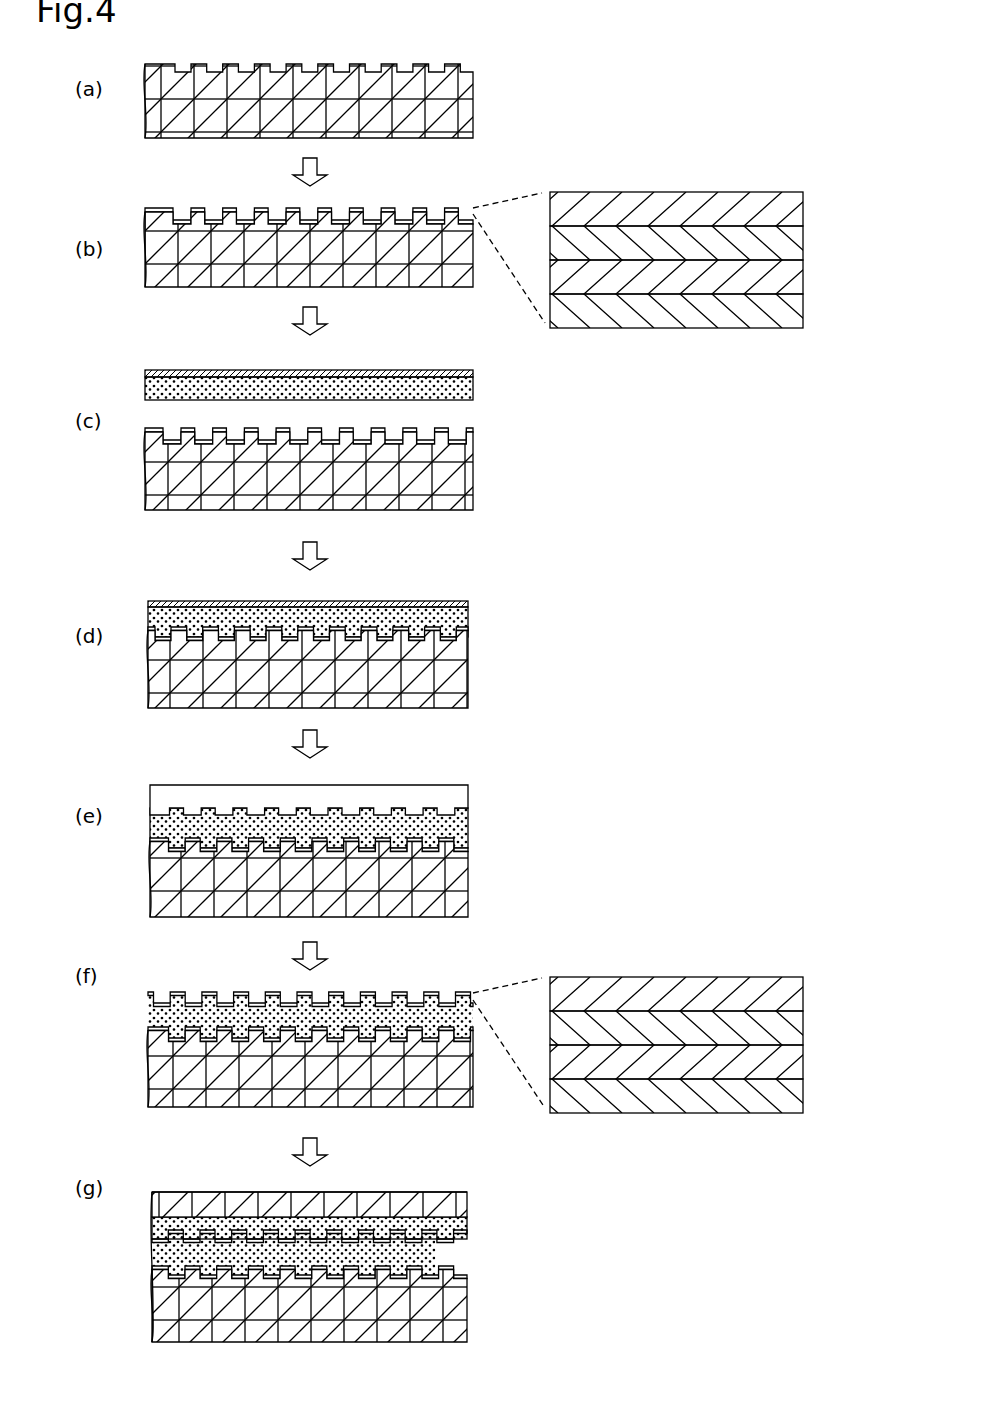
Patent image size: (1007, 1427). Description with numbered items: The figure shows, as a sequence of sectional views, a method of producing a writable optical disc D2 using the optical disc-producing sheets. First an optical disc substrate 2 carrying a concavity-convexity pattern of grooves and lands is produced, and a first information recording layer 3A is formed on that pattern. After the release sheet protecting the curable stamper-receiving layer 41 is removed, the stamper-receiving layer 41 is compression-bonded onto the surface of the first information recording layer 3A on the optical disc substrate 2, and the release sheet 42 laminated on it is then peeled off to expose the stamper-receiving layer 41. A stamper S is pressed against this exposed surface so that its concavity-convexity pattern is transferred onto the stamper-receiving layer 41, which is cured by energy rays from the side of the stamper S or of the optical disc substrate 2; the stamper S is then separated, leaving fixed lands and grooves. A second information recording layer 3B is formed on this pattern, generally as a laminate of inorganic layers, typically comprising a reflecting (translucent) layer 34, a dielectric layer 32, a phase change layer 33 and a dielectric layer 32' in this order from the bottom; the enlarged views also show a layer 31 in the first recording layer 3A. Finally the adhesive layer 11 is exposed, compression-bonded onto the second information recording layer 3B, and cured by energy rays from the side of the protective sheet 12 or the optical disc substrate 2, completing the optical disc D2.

The optical disc substrate 2 is at (474, 108).
The first information recording layer 3A is at (408, 208).
The second information recording layer 3B is at (413, 992).
The stamper-receiving layer 41 is at (474, 392).
The release sheet 42 is at (452, 371).
The stamper S is at (452, 787).
The first layer 31 is at (805, 311).
The dielectric layer 32 is at (708, 669).
The dielectric layer 32' is at (710, 601).
The phase change layer 33 is at (805, 243).
The reflecting layer 34 is at (805, 1096).
The adhesive layer 11 is at (468, 1218).
The protective sheet 12 is at (455, 1192).
The optical disc D2 is at (177, 1187).